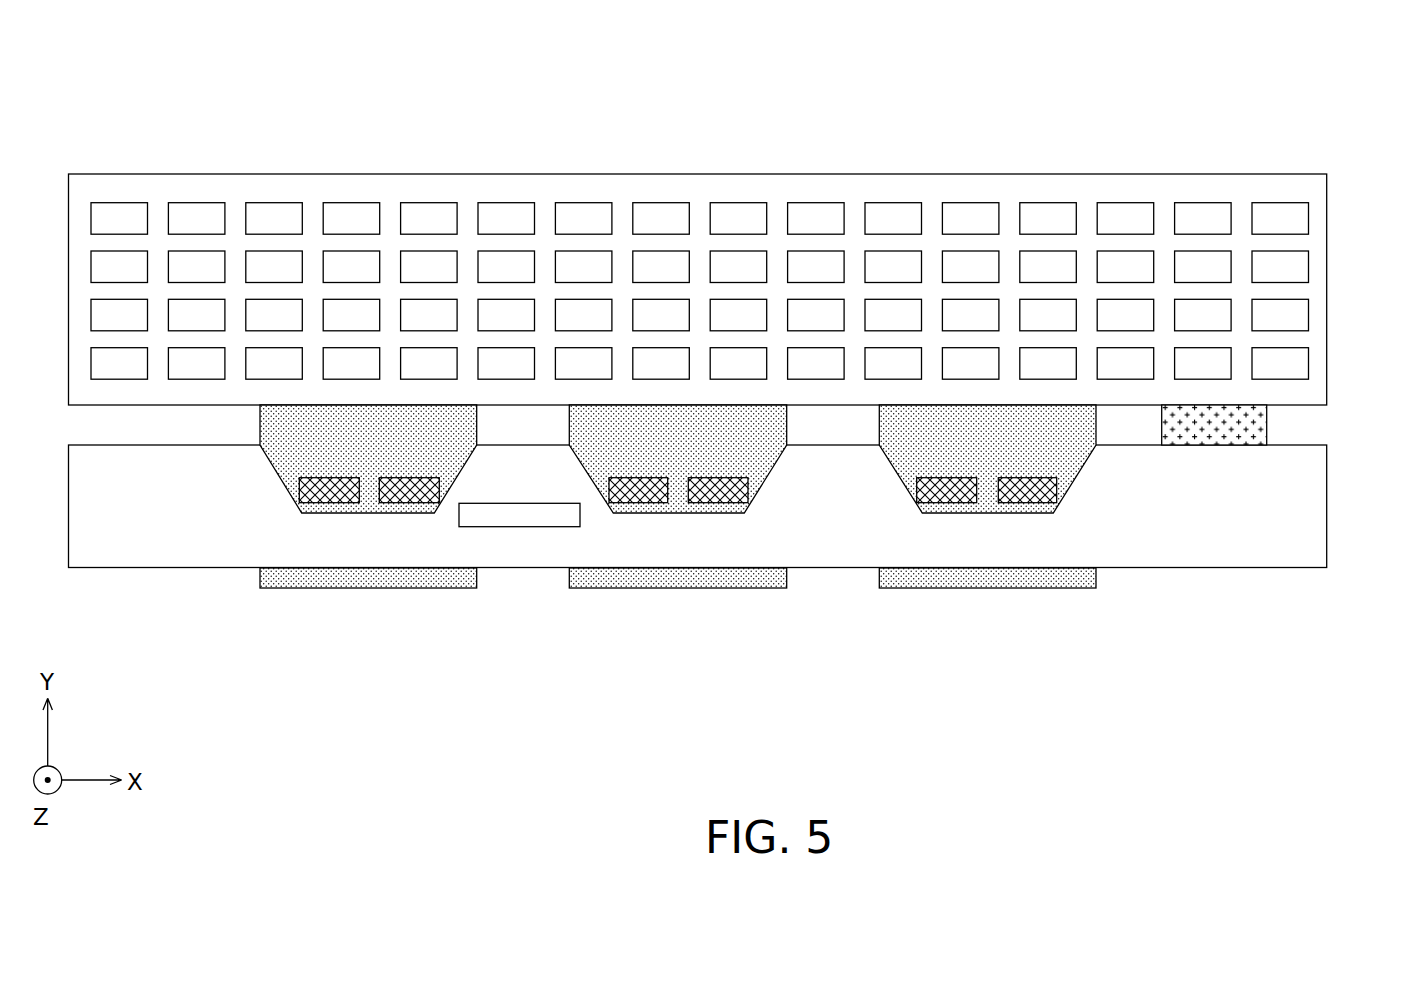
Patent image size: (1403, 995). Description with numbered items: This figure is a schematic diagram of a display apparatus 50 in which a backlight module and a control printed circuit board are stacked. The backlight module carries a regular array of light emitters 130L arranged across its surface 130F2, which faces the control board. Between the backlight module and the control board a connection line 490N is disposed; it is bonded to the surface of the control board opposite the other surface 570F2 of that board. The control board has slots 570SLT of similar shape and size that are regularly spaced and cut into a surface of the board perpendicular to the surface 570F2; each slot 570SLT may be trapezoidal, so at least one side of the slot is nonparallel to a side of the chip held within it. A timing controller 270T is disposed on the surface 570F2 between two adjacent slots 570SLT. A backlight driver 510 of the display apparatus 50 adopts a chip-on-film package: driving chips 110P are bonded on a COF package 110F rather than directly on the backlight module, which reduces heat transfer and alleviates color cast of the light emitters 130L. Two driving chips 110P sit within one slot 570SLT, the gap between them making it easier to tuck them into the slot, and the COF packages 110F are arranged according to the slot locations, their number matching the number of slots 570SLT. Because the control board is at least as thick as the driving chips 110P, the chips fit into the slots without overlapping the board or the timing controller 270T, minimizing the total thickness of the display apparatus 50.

The display apparatus 50 is at (150, 103).
The surface of the backlight module 130F2 is at (1120, 142).
The light emitters 130L is at (1295, 218).
The connection line 490N is at (1257, 427).
The surface of the control PCB 570F2 is at (188, 542).
The slots 570SLT is at (366, 523).
The timing controller 270T is at (522, 520).
The COF package 110F is at (897, 583).
The driving chip 110P is at (1081, 637).
The backlight driver 510 is at (689, 591).